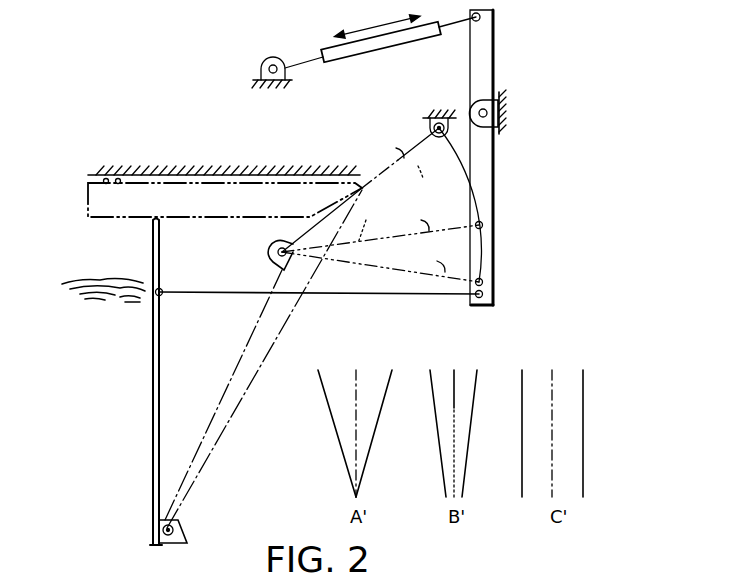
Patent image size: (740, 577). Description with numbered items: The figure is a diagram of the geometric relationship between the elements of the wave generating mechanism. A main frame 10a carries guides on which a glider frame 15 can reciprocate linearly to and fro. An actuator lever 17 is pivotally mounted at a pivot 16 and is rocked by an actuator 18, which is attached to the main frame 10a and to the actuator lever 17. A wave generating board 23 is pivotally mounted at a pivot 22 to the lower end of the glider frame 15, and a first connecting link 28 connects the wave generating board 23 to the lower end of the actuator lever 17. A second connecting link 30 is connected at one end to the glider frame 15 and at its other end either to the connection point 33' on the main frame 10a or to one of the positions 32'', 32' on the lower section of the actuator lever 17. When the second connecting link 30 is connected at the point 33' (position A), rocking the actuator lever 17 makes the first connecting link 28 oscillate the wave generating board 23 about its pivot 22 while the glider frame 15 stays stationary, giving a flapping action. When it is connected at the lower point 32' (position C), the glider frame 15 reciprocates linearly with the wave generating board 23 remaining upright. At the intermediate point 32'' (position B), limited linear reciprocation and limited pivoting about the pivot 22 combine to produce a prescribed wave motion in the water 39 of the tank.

The main frame 10a is at (252, 77).
The glider frame 15 is at (258, 330).
The pivot 16 is at (483, 100).
The actuator lever 17 is at (484, 48).
The actuator 18 is at (376, 42).
The pivot 22 is at (181, 530).
The wave generating board 23 is at (152, 357).
The first connecting link 28 is at (420, 296).
The second connecting link 30 is at (410, 178).
The position 32' is at (511, 284).
The position 32'' is at (514, 224).
The connection point 33' is at (424, 106).
The water 39 is at (124, 334).